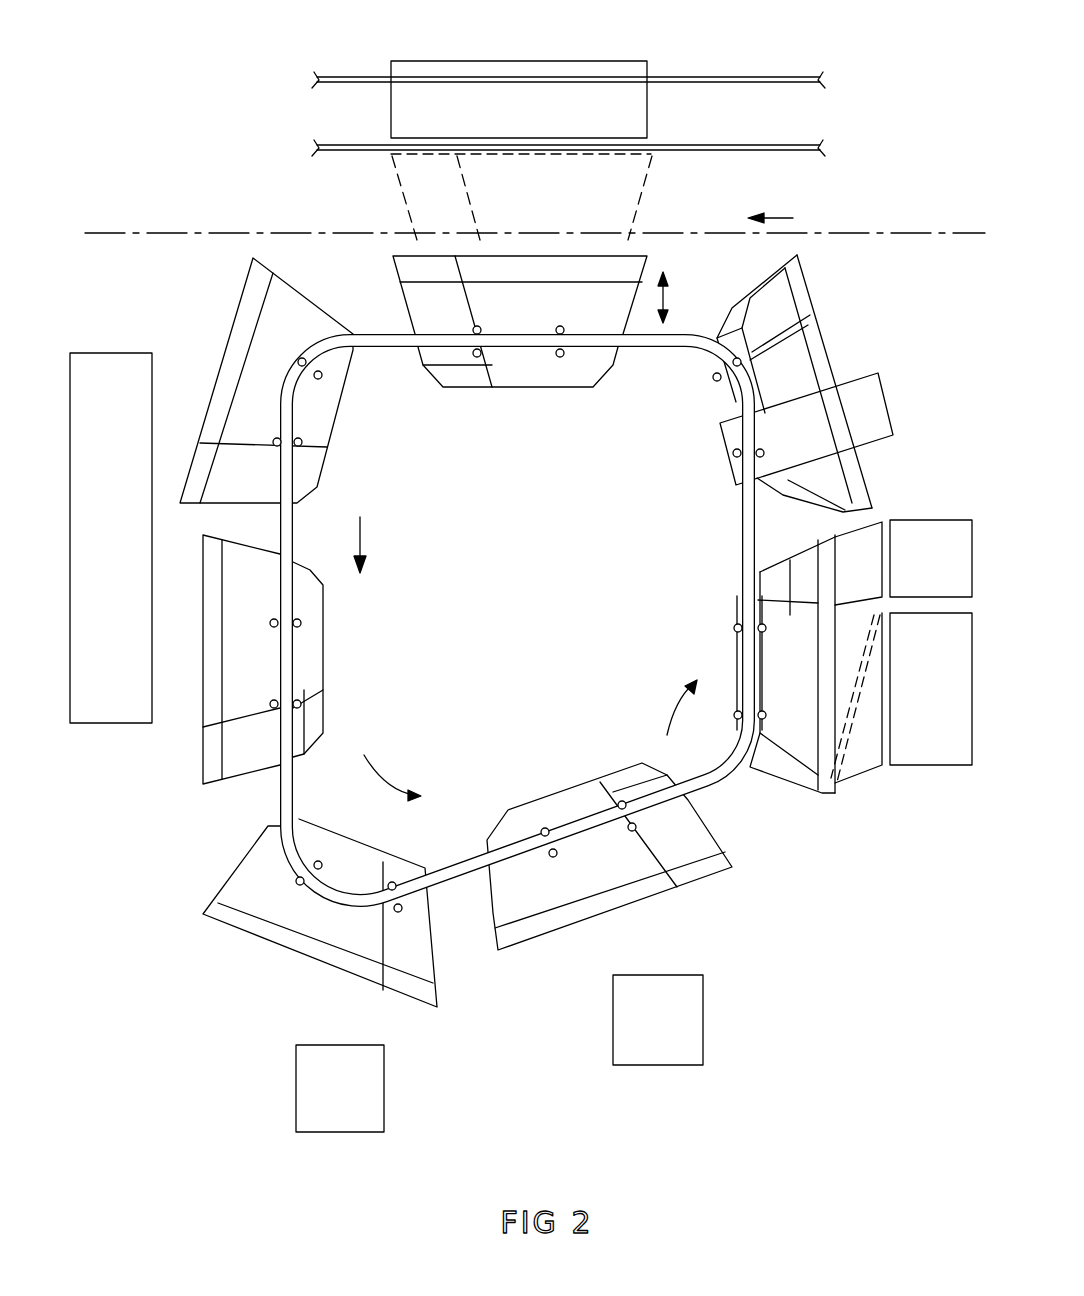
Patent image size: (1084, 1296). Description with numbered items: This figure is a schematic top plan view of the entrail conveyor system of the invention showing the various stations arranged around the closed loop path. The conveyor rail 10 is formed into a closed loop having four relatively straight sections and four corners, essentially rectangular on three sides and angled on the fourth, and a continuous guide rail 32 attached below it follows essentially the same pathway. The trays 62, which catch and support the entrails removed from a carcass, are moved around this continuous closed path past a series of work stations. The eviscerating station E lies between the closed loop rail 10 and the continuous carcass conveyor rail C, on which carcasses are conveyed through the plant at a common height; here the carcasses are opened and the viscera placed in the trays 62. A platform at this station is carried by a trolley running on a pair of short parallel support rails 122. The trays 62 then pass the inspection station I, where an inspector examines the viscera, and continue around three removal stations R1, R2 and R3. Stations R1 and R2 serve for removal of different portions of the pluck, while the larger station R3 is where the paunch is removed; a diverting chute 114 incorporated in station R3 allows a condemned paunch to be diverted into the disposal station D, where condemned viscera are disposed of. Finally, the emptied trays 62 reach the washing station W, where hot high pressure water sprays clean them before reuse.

The conveyor rail 10 is at (647, 348).
The guide rail 32 is at (295, 792).
The tray 62 is at (487, 388).
The diverting chute 114 is at (847, 753).
The support rails 122 is at (786, 77).
The eviscerating station E is at (651, 98).
The carcass conveyor rail C is at (944, 233).
The inspection station I is at (125, 378).
The disposal station D is at (946, 520).
The washing station W is at (893, 400).
The removal station R1 is at (338, 1133).
The removal station R2 is at (652, 1066).
The removal station R3 is at (930, 766).